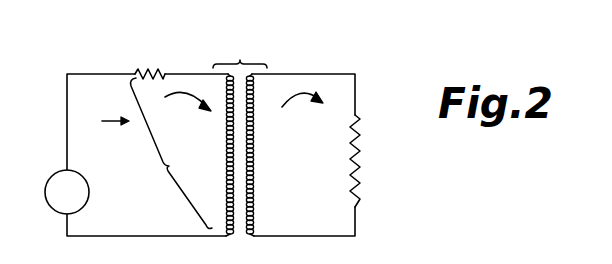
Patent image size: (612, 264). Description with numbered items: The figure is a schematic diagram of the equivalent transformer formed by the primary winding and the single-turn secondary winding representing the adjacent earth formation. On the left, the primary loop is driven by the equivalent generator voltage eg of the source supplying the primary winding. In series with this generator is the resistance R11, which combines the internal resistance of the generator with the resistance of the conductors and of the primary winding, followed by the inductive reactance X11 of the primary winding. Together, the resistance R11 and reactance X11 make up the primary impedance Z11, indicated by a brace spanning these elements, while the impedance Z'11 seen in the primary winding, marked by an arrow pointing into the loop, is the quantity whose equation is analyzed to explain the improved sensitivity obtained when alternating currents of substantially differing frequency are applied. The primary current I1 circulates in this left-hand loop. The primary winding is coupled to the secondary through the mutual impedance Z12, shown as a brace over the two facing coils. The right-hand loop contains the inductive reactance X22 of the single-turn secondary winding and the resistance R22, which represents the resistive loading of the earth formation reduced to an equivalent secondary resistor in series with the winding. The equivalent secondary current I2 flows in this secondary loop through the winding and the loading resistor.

The internal resistance of the generator plus conductor and winding resistance R11 is at (139, 71).
The mutual impedance between primary and secondary Z12 is at (240, 53).
The impedance seen in the primary winding Z'11 is at (99, 123).
The primary impedance Z11 is at (171, 153).
The primary current I1 is at (188, 108).
The equivalent secondary current I2 is at (302, 109).
The inductive reactance of the primary winding X11 is at (226, 154).
The inductive reactance of the secondary winding X22 is at (253, 172).
The resistive loading of earth formation R22 is at (357, 179).
The equivalent generator voltage eg is at (67, 192).